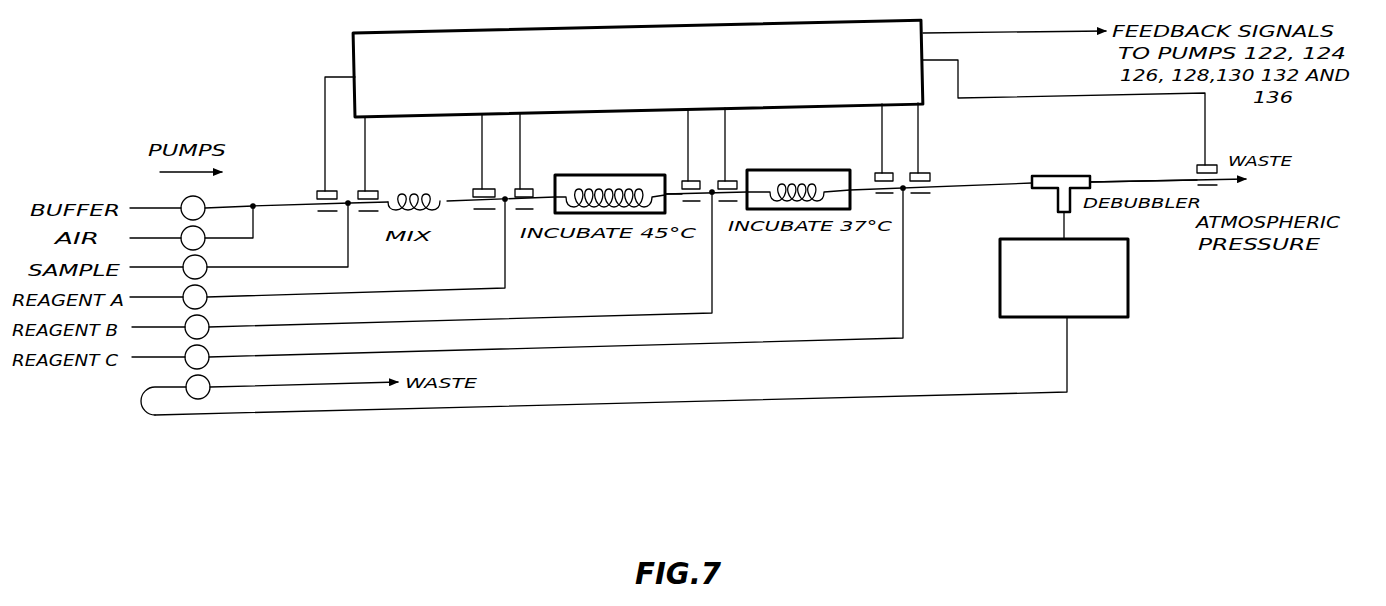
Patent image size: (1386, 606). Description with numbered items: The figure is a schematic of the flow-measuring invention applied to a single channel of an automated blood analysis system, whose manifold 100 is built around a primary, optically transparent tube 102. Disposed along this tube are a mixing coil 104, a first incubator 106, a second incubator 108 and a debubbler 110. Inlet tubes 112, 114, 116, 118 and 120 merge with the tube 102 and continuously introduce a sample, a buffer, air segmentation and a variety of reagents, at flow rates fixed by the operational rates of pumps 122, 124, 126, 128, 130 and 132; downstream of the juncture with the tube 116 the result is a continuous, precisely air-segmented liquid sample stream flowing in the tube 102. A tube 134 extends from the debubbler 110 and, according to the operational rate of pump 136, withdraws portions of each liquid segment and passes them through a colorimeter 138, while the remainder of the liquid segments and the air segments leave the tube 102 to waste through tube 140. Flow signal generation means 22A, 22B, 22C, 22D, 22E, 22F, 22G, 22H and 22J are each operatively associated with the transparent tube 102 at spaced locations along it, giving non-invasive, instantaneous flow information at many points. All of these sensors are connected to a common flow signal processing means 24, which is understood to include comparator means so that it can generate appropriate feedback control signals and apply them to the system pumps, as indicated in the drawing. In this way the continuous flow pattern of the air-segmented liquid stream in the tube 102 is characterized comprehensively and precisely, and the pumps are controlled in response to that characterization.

The flow signal processing means 24 is at (350, 55).
The flow signal generation means 22A is at (334, 186).
The flow signal generation means 22B is at (378, 188).
The flow signal generation means 22C is at (491, 184).
The flow signal generation means 22D is at (531, 185).
The flow signal generation means 22E is at (700, 177).
The flow signal generation means 22F is at (738, 177).
The flow signal generation means 22G is at (892, 169).
The flow signal generation means 22H is at (932, 169).
The flow signal generation means 22J is at (1198, 162).
The manifold 100 is at (616, 283).
The primary optically transparent tube 102 is at (677, 192).
The mixing coil 104 is at (436, 196).
The incubator 106 is at (630, 170).
The incubator 108 is at (823, 168).
The debubbler 110 is at (1088, 172).
The tube 112 is at (236, 208).
The tube 114 is at (230, 238).
The tube 116 is at (234, 267).
The tube 118 is at (253, 290).
The tube 120 is at (258, 316).
The pump 122 is at (184, 201).
The pump 124 is at (184, 231).
The pump 126 is at (186, 260).
The pump 128 is at (186, 290).
The pump 130 is at (188, 320).
The pump 132 is at (188, 350).
The tube 134 is at (1067, 352).
The pump 136 is at (188, 380).
The colorimeter 138 is at (998, 279).
The tube 140 is at (1144, 168).